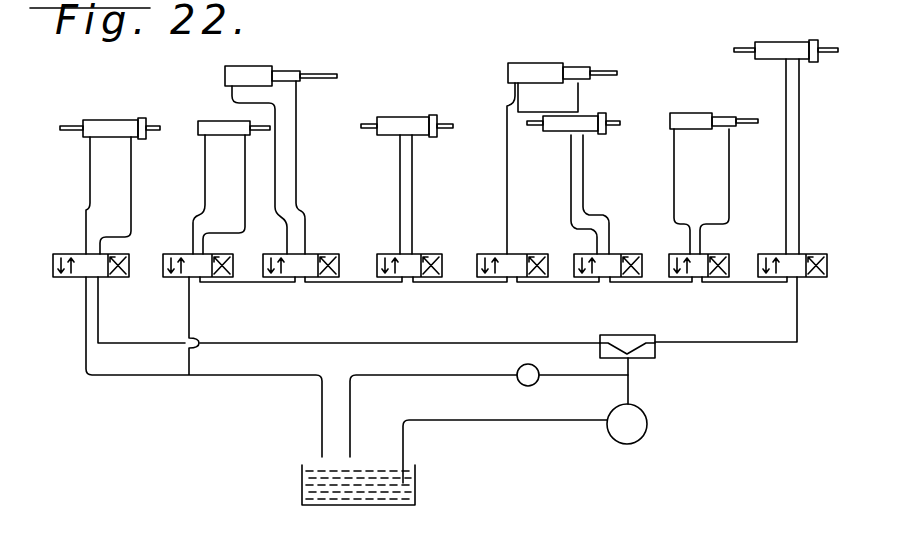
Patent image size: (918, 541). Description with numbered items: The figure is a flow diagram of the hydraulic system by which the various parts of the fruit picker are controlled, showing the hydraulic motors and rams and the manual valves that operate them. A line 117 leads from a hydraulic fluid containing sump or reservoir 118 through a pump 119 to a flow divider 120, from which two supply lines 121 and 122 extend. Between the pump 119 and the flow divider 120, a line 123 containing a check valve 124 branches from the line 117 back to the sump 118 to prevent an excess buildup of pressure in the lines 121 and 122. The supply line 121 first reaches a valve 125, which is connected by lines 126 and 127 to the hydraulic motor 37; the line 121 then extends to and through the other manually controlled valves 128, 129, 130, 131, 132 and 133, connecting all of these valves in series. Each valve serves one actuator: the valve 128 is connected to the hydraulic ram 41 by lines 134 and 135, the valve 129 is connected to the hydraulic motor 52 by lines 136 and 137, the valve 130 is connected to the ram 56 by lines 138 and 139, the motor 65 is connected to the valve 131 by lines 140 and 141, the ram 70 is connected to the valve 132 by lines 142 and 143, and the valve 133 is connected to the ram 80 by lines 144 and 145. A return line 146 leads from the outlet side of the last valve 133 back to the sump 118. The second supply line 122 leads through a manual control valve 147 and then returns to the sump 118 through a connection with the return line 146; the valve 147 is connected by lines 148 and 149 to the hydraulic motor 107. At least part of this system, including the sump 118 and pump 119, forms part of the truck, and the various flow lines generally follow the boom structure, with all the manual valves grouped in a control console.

The hydraulic motor 107 is at (122, 120).
The hydraulic ram 80 is at (216, 117).
The hydraulic ram 70 is at (265, 66).
The hydraulic motor 65 is at (411, 117).
The hydraulic ram 56 is at (544, 63).
The hydraulic motor 52 is at (580, 120).
The hydraulic ram 41 is at (702, 118).
The hydraulic motor 37 is at (792, 42).
The line 149 is at (90, 170).
The line 148 is at (131, 180).
The line 145 is at (203, 166).
The line 144 is at (245, 180).
The line 143 is at (276, 177).
The line 142 is at (297, 188).
The line 141 is at (400, 200).
The line 140 is at (413, 225).
The line 139 is at (507, 193).
The line 138 is at (518, 220).
The line 137 is at (571, 182).
The line 136 is at (583, 202).
The line 135 is at (676, 178).
The line 134 is at (728, 171).
The line 127 is at (785, 172).
The line 126 is at (799, 205).
The manual control valve 147 is at (131, 262).
The manually controlled valve 133 is at (233, 260).
The manually controlled valve 132 is at (323, 255).
The manually controlled valve 131 is at (430, 255).
The manually controlled valve 130 is at (533, 253).
The manually controlled valve 129 is at (618, 252).
The manually controlled valve 128 is at (717, 252).
The valve 125 is at (826, 238).
The supply line 121 is at (655, 283).
The supply line 122 is at (533, 343).
The return line 146 is at (192, 365).
The line 123 is at (472, 375).
The check valve 124 is at (532, 382).
The flow divider 120 is at (648, 353).
The pump 119 is at (645, 423).
The line 117 is at (518, 422).
The sump or reservoir 118 is at (368, 498).